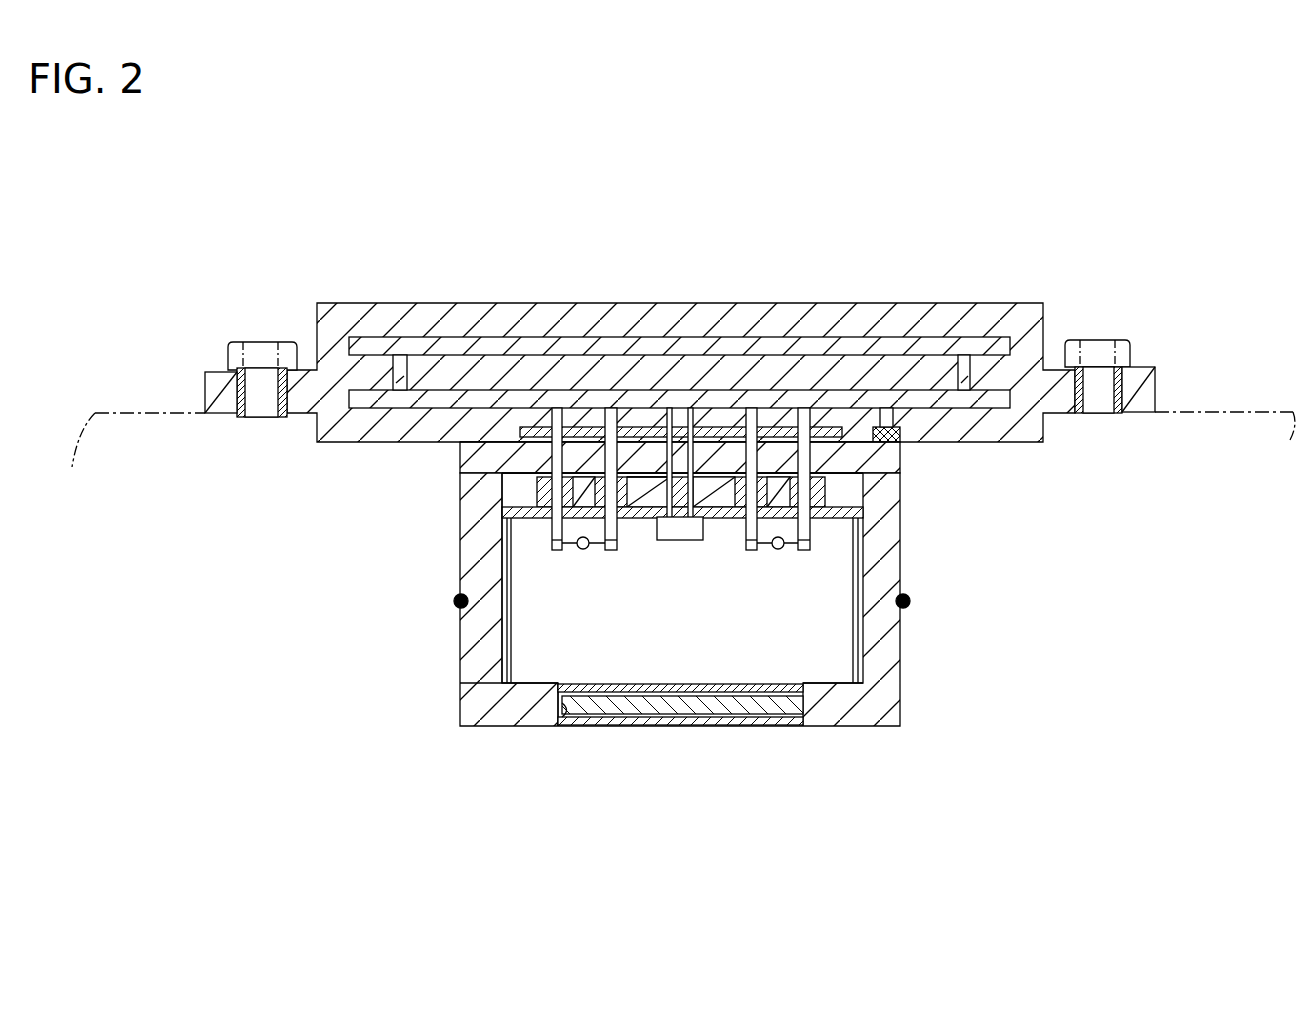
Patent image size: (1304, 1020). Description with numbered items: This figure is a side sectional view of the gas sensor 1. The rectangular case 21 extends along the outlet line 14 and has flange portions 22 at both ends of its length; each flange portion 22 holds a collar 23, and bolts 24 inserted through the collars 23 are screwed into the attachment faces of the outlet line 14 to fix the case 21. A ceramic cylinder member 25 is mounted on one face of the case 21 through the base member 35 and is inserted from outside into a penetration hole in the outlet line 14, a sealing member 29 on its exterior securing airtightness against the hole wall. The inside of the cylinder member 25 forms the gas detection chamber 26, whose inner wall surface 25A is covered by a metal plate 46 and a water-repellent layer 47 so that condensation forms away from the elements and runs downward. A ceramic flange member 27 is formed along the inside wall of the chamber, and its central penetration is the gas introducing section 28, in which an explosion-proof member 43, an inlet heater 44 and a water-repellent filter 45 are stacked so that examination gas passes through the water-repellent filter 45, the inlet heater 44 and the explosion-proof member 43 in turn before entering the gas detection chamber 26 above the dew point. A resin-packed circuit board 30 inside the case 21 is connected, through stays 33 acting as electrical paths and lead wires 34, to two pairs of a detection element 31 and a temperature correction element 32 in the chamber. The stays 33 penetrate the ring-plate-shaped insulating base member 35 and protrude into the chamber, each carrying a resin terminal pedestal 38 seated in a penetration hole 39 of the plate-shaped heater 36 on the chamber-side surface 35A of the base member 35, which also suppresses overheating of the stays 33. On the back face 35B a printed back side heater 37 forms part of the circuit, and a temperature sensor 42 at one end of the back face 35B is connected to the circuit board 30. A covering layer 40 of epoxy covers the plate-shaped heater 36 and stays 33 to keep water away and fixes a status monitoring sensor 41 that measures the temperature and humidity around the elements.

The gas sensor 1 is at (1162, 217).
The outlet line 14 is at (97, 425).
The case 21 is at (355, 299).
The flange portions 22 is at (218, 397).
The collar 23 is at (241, 385).
The bolts 24 is at (263, 355).
The cylinder member 25 is at (477, 487).
The inner wall surface 25A is at (507, 588).
The gas detection chamber 26 is at (522, 668).
The flange member 27 is at (510, 705).
The gas introducing section 28 is at (572, 712).
The sealing member 29 is at (455, 603).
The circuit board 30 is at (432, 397).
The detection element 31 is at (584, 551).
The temperature correction element 32 is at (778, 551).
The stays 33 is at (555, 532).
The lead wires 34 is at (575, 546).
The base member 35 is at (888, 458).
The surface 35A is at (722, 475).
The back face 35B is at (718, 425).
The plate-shaped heater 36 is at (528, 490).
The back side heater 37 is at (537, 432).
The terminal pedestals 38 is at (527, 522).
The penetration holes 39 is at (533, 517).
The covering layer 40 is at (643, 507).
The status monitoring sensor 41 is at (682, 532).
The temperature sensor 42 is at (899, 437).
The explosion-proof member 43 is at (628, 695).
The inlet heater 44 is at (693, 708).
The water-repellent filter 45 is at (765, 722).
The metal plate 46 is at (504, 628).
The water-repellent layer 47 is at (530, 660).